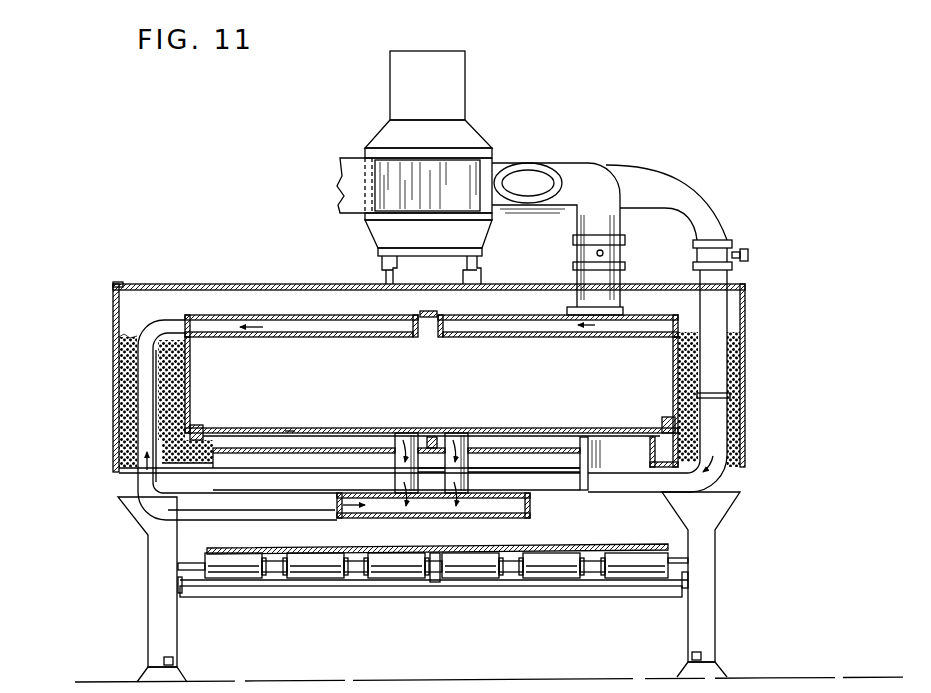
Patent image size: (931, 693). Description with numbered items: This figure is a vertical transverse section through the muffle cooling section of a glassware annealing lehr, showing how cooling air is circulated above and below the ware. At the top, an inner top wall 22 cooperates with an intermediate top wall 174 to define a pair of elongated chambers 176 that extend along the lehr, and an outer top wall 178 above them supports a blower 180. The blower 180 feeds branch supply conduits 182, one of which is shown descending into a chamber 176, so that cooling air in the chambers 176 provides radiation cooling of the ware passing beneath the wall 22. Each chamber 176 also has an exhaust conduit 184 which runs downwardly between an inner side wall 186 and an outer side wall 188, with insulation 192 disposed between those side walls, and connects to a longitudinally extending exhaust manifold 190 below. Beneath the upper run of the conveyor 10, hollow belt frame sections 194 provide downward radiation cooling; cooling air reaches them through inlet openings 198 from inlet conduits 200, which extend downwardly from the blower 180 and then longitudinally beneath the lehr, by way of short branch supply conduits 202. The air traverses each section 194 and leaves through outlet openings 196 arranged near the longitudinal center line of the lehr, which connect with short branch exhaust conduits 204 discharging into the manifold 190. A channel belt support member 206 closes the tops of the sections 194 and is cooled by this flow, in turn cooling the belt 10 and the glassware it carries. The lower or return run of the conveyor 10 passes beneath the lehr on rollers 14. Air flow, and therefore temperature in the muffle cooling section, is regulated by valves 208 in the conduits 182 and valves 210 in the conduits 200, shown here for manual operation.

The conveyor 10 is at (290, 430).
The rollers 14 is at (402, 572).
The inner top wall 22 is at (272, 337).
The intermediate top wall 174 is at (277, 316).
The elongated chambers 176 is at (346, 307).
The outer top wall 178 is at (195, 285).
The blower 180 is at (470, 130).
The branch supply conduits 182 is at (590, 176).
The exhaust conduit 184 is at (150, 500).
The inner side wall 186 is at (190, 388).
The outer side wall 188 is at (113, 365).
The exhaust manifold 190 is at (530, 508).
The insulation 192 is at (130, 403).
The hollow belt frame sections 194 is at (293, 452).
The outlet openings 196 is at (413, 431).
The inlet openings 198 is at (587, 430).
The inlet conduits 200 is at (698, 205).
The branch supply conduits 202 is at (583, 481).
The branch exhaust conduits 204 is at (383, 432).
The channel belt support member 206 is at (300, 430).
The valves 208 is at (625, 254).
The valves 210 is at (712, 258).